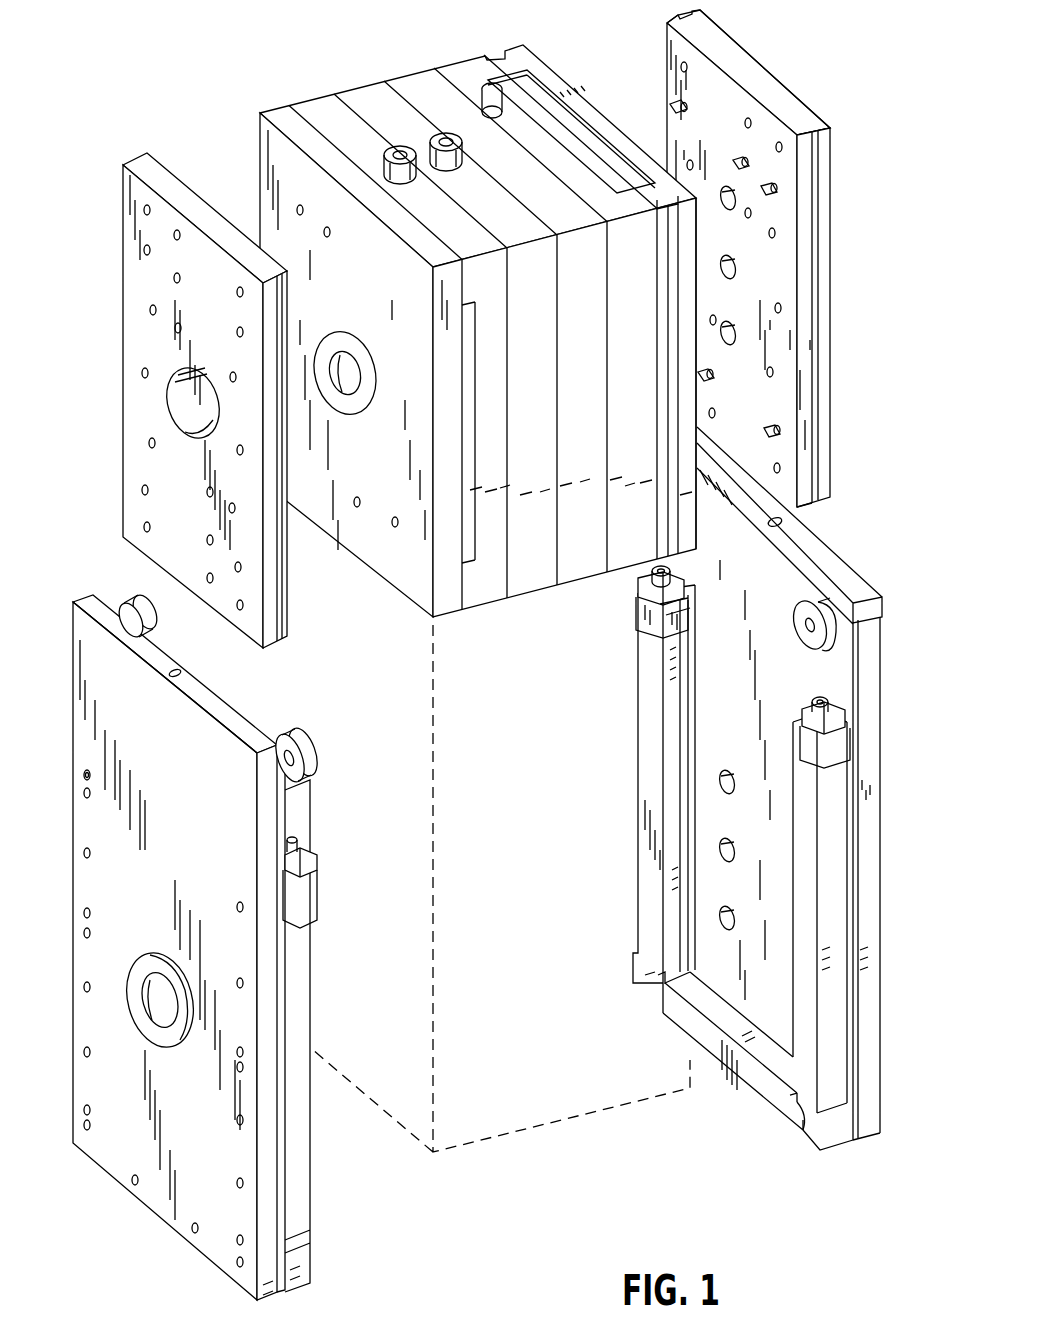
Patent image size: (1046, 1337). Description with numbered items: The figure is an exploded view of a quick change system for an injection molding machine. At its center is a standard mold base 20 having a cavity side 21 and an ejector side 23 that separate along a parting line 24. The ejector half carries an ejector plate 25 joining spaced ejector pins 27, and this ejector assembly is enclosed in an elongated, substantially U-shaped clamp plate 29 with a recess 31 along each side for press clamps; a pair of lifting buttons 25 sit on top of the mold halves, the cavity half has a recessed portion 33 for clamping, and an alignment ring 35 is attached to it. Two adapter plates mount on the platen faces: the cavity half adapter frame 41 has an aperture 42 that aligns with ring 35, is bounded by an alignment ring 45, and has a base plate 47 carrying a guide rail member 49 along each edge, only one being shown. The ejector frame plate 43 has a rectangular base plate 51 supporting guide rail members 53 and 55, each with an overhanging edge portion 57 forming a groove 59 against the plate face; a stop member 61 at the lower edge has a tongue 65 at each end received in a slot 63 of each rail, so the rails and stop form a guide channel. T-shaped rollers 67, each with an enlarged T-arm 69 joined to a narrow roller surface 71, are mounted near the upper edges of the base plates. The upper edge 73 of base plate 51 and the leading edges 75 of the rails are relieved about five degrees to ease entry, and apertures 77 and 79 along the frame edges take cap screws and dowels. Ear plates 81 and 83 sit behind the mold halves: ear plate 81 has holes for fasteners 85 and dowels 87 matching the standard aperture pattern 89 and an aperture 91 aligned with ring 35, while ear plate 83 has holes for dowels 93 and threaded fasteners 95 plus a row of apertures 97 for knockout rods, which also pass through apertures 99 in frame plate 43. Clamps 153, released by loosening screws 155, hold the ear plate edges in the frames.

The mold base 20 is at (430, 665).
The cavity side 21 is at (479, 335).
The ejector side 23 is at (382, 88).
The parting line 24 is at (507, 598).
The ejector plate 25 is at (388, 148).
The ejector pins 27 is at (486, 100).
The clamp plate 29 is at (617, 397).
The recess 31 is at (503, 54).
The recessed portion 33 is at (464, 565).
The alignment ring 35 is at (356, 338).
The cavity half adapter frame 41 is at (191, 947).
The aperture 42 is at (160, 1012).
The ejector frame plate 43 is at (756, 795).
The alignment ring 45 is at (157, 962).
The base plate 47 is at (243, 727).
The guide rail member 49 is at (308, 1272).
The base plate 51 is at (822, 556).
The guide rail member 53 is at (650, 721).
The guide rail member 55 is at (842, 857).
The overhanging edge portion 57 is at (672, 757).
The groove 59 is at (685, 725).
The stop member 61 is at (728, 1051).
The slot 63 is at (640, 985).
The tongue 65 is at (670, 1030).
The T-shaped roller 67 is at (160, 617).
The T-arm 69 is at (810, 643).
The roller surface 71 is at (826, 603).
The upper edge 73 is at (853, 617).
The leading edge 75 is at (668, 612).
The aperture 77 is at (83, 777).
The aperture 79 is at (83, 796).
The ear plate 81 is at (178, 383).
The ear plate 83 is at (765, 258).
The fastener 85 is at (143, 252).
The dowel 87 is at (174, 280).
The standard aperture pattern 89 is at (327, 238).
The aperture 91 is at (180, 402).
The dowel 93 is at (738, 160).
The threaded fastener 95 is at (778, 188).
The aperture 97 is at (730, 330).
The aperture 99 is at (738, 918).
The clamp 153 is at (640, 590).
The screw 155 is at (670, 570).